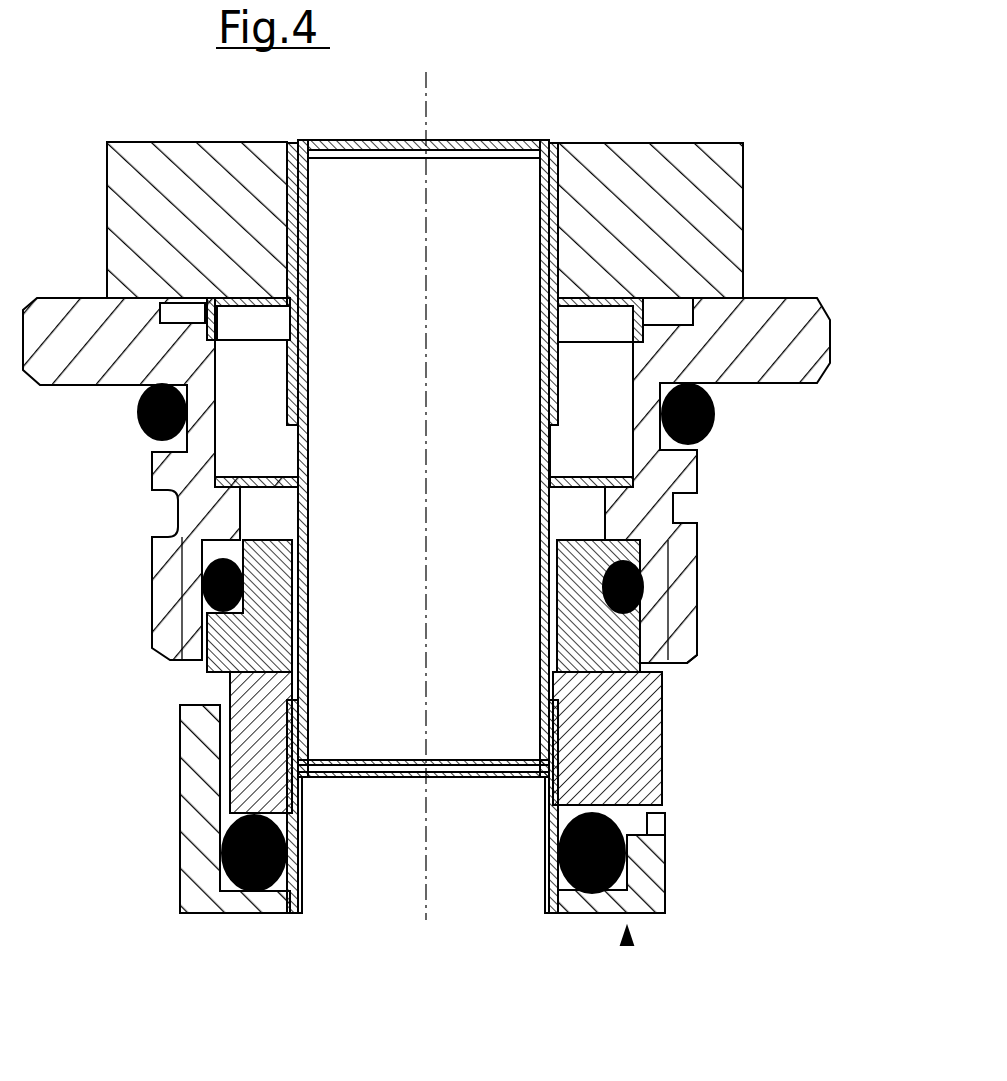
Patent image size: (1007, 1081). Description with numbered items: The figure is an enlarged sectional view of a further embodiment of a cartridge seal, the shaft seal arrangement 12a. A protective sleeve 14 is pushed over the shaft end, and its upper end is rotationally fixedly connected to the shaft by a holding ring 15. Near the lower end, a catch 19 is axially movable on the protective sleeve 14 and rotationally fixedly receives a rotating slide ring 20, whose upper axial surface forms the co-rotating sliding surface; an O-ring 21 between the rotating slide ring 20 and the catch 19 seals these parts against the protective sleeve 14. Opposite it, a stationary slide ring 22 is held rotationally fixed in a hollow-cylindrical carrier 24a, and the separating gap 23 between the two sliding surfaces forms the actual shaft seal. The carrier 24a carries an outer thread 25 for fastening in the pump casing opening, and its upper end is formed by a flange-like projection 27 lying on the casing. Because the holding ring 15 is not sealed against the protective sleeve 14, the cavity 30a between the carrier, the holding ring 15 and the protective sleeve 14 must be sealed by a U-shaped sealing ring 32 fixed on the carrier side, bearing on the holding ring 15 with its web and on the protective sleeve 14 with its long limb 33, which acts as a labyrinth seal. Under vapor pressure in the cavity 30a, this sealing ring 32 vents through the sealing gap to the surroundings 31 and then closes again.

The holding ring 15 is at (188, 196).
The protective sleeve 14 is at (311, 243).
The surroundings 31 is at (650, 180).
The sealing ring 32 is at (612, 297).
The long limb 33 is at (560, 390).
The flange-like projection 27 is at (757, 361).
The cavity 30a is at (591, 414).
The carrier 24a is at (690, 560).
The stationary slide ring 22 is at (643, 632).
The separating gap 23 is at (643, 675).
The rotating slide ring 20 is at (663, 762).
The O-ring 21 is at (643, 838).
The catch 19 is at (657, 908).
The outer thread 25 is at (167, 628).
The shaft seal arrangement 12a is at (628, 942).